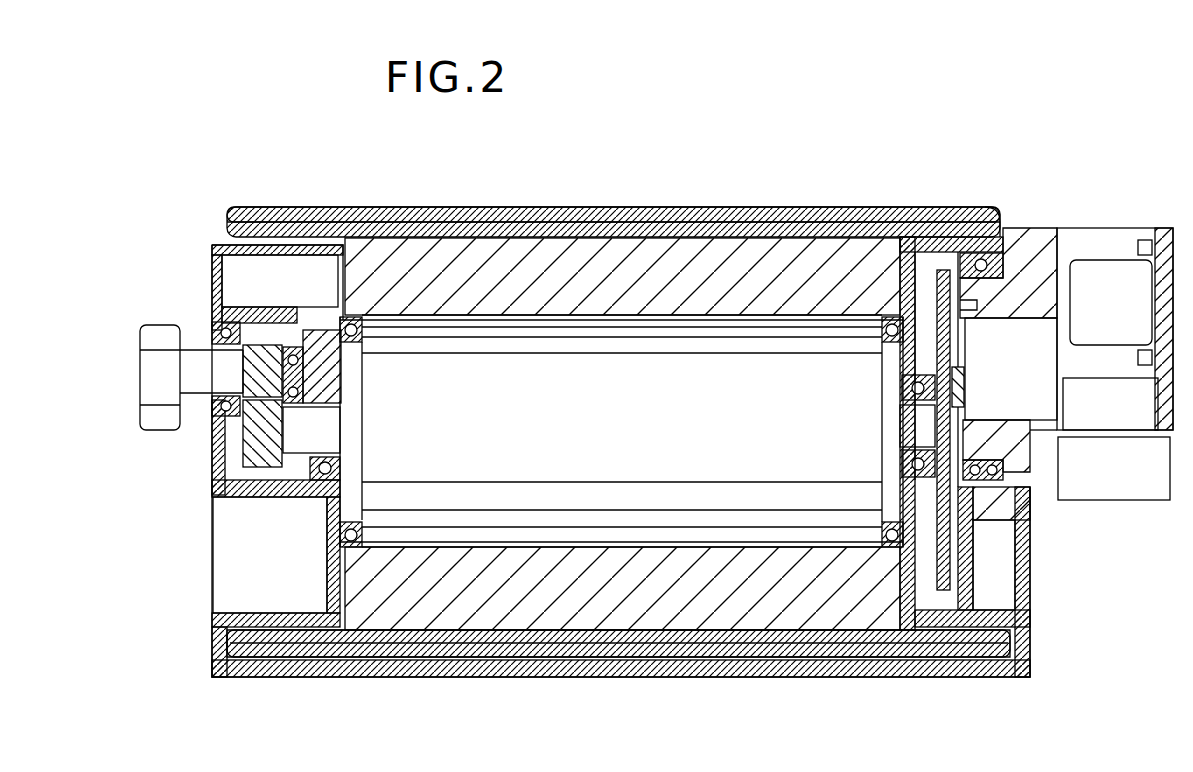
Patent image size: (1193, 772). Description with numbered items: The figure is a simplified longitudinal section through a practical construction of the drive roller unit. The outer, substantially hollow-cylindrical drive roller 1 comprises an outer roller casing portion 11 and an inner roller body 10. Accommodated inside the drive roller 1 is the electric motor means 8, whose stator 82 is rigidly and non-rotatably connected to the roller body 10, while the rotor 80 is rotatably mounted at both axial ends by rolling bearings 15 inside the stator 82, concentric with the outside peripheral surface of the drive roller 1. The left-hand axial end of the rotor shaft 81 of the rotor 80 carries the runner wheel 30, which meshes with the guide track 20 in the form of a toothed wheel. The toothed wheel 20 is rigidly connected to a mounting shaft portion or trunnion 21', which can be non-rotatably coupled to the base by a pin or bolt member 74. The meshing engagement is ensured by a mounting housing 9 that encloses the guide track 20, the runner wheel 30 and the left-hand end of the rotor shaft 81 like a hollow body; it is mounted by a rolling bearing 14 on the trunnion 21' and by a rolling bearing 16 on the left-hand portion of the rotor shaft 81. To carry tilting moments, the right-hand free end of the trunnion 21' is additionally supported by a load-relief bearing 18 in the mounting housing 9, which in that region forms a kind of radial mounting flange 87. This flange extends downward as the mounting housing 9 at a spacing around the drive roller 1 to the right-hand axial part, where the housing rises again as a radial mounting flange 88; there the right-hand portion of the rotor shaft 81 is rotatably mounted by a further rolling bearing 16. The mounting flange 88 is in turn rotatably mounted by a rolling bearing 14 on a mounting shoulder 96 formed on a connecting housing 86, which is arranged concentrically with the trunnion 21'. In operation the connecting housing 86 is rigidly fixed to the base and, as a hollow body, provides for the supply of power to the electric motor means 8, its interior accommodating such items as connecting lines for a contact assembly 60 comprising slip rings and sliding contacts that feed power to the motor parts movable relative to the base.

The drive roller 1 is at (998, 210).
The electric motor means 8 is at (836, 308).
The mounting housing 9 is at (220, 288).
The roller body 10 is at (667, 231).
The roller casing portion 11 is at (598, 215).
The rolling bearing 14 is at (212, 332).
The rolling bearings 15 is at (351, 316).
The rolling bearing 16 is at (322, 482).
The load-relief bearing 18 is at (310, 332).
The guide track 20 is at (267, 356).
The mounting shaft portion or trunnion 21' is at (191, 412).
The runner wheel 30 is at (245, 450).
The contact assembly 60 is at (968, 385).
The pin or bolt member 74 is at (157, 325).
The rotor 80 is at (515, 345).
The rotor shaft 81 is at (300, 437).
The stator 82 is at (793, 250).
The connecting housing 86 is at (1105, 228).
The radial mounting flange 87 is at (328, 583).
The radial mounting flange 88 is at (932, 580).
The mounting shoulder 96 is at (1020, 262).